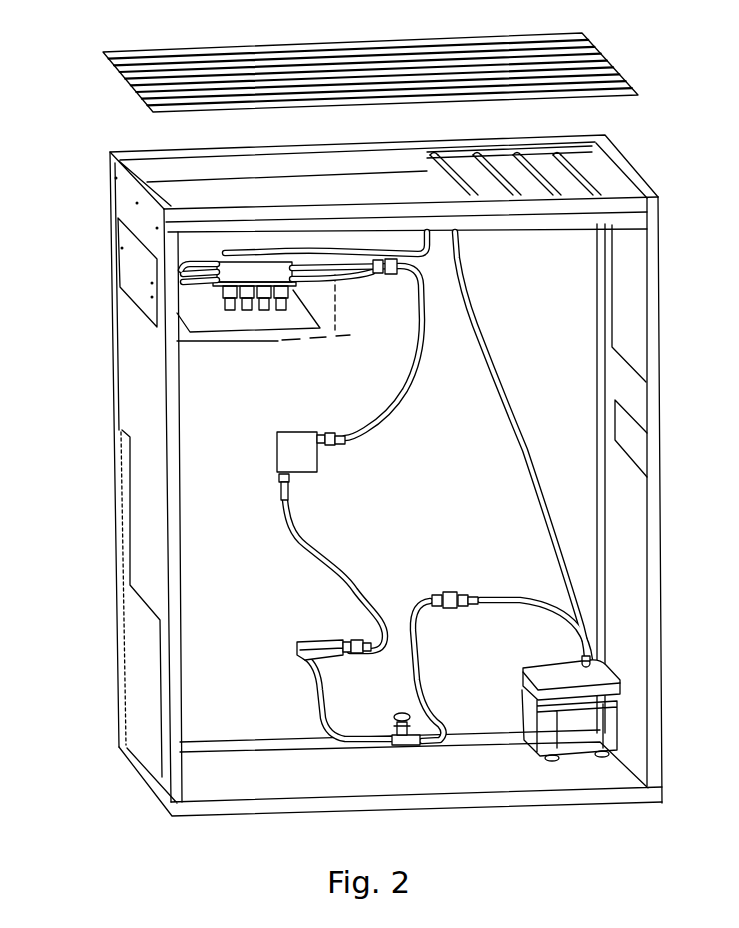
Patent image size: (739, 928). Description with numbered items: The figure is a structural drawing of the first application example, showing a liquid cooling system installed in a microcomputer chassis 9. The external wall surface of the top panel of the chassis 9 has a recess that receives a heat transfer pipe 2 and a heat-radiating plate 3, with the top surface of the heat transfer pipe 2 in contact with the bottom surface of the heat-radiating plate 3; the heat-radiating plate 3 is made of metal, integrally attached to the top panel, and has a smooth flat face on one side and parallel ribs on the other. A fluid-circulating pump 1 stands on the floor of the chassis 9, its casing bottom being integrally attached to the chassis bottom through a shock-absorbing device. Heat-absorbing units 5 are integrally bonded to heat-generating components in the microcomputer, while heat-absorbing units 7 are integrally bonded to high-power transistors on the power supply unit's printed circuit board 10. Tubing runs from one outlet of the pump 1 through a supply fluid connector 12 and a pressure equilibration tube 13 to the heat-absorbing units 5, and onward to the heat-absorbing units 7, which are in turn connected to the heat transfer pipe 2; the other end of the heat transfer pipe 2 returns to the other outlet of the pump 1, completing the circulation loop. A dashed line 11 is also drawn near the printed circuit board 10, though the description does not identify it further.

The fluid-circulating pump 1 is at (590, 727).
The heat transfer pipe 2 is at (603, 177).
The heat-radiating plate 3 is at (603, 53).
The heat-absorbing units 5 is at (293, 445).
The heat-absorbing units 7 is at (293, 290).
The microcomputer chassis 9 is at (128, 413).
The printed circuit board 10 is at (220, 342).
The drain line 11 is at (270, 341).
The supply fluid connector 12 is at (455, 595).
The pressure equilibration tube 13 is at (410, 745).